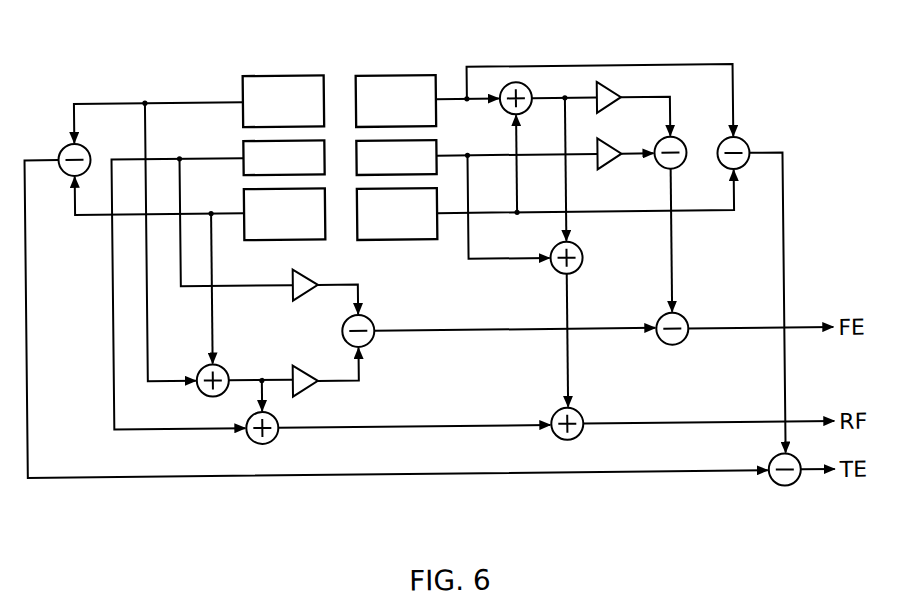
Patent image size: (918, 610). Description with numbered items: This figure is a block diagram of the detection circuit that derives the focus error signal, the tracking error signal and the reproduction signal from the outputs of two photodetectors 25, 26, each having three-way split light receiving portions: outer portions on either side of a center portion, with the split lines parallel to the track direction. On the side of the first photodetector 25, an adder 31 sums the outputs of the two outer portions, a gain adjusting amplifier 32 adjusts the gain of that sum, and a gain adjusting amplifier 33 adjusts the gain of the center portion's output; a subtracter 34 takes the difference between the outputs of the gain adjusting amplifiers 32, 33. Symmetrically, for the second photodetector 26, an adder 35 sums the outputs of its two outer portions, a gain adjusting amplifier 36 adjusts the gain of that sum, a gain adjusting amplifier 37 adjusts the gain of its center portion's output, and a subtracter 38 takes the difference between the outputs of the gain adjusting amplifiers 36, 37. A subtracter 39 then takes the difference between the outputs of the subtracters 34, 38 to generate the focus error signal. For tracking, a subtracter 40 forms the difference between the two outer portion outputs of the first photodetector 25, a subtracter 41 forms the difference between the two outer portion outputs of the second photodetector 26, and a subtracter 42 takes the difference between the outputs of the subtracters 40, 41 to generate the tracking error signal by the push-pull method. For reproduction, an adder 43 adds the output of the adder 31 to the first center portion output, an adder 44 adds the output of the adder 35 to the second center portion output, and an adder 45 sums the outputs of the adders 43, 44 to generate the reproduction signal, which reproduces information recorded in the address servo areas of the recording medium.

The photodetector 25 is at (420, 70).
The photodetector 26 is at (309, 70).
The adder 31 is at (505, 112).
The gain adjusting amplifier 32 is at (608, 108).
The gain adjusting amplifier 33 is at (608, 165).
The subtracter 34 is at (683, 143).
The adder 35 is at (201, 390).
The gain adjusting amplifier 36 is at (305, 368).
The gain adjusting amplifier 37 is at (306, 272).
The subtracter 38 is at (369, 318).
The subtracter 39 is at (683, 319).
The subtracter 40 is at (746, 144).
The subtracter 41 is at (64, 169).
The subtracter 42 is at (772, 485).
The adder 43 is at (556, 248).
The adder 44 is at (250, 438).
The adder 45 is at (577, 413).